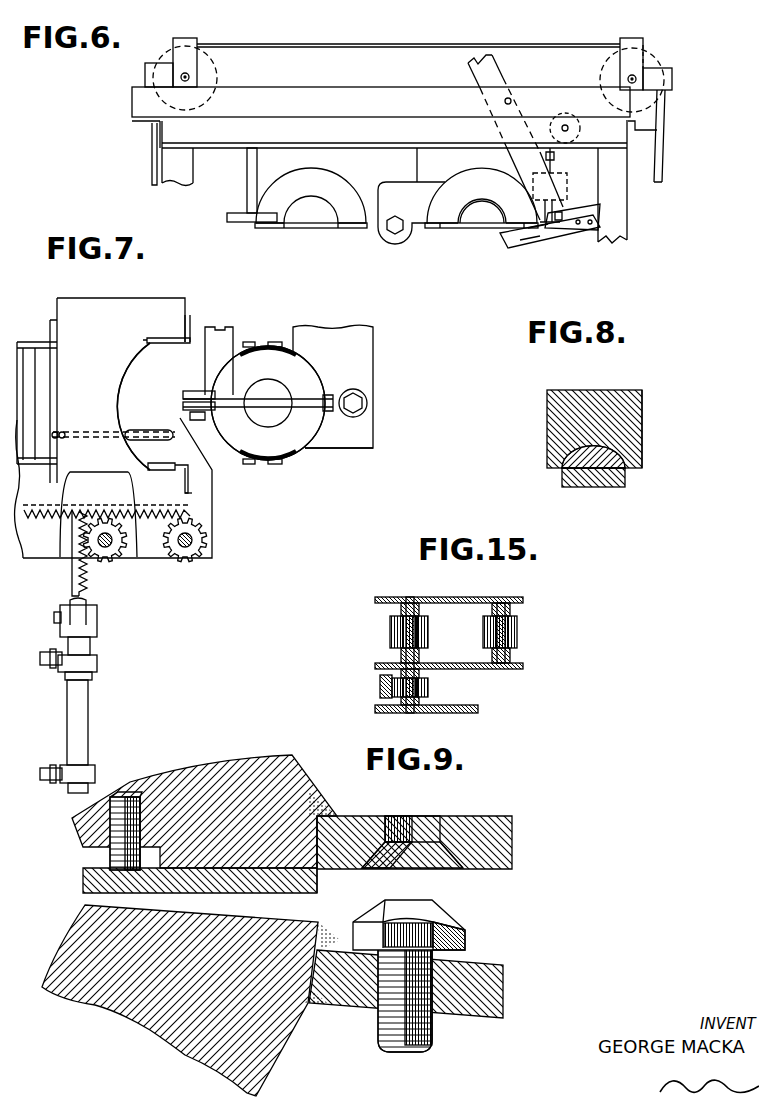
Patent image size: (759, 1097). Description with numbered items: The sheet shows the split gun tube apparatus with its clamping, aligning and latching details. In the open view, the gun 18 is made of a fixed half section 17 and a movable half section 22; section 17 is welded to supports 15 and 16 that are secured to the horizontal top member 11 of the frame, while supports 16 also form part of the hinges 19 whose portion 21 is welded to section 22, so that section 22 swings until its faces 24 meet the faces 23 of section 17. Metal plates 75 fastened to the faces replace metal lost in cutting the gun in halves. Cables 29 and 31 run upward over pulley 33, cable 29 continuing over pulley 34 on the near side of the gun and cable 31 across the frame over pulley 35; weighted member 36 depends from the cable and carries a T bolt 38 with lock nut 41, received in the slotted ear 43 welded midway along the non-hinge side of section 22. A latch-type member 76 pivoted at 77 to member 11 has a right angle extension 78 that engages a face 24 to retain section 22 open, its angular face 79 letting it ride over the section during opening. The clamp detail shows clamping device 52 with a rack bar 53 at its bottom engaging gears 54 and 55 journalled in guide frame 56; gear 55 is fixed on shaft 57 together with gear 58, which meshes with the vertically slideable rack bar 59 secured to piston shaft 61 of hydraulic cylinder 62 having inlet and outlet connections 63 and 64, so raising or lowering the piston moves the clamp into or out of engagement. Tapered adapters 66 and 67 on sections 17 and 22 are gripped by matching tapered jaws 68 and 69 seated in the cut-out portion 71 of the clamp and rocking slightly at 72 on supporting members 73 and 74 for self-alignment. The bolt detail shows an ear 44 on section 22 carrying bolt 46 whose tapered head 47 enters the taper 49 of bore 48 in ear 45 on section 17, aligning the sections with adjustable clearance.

In FIG. 6, the horizontal top member 11 is at (388, 117).
In FIG. 6, the support 15 is at (247, 178).
In FIG. 7, the support 15 is at (218, 328).
In FIG. 6, the support 16 is at (408, 163).
In FIG. 7, the support 16 is at (373, 343).
In FIG. 6, the half section 17 is at (320, 199).
In FIG. 7, the half section 17 is at (302, 379).
In FIG. 9, the half section 17 is at (290, 760).
In FIG. 6, the gun 18 is at (395, 176).
In FIG. 7, the gun 18 is at (301, 348).
In FIG. 6, the hinge 19 is at (395, 230).
In FIG. 7, the hinge 19 is at (362, 402).
In FIG. 6, the hinge portion 21 is at (415, 229).
In FIG. 7, the hinge portion 21 is at (350, 448).
In FIG. 6, the half section 22 is at (491, 197).
In FIG. 7, the half section 22 is at (300, 436).
In FIG. 9, the half section 22 is at (263, 1078).
In FIG. 6, the face 23 is at (338, 226).
In FIG. 6, the face 24 is at (447, 229).
In FIG. 6, the cable 29 is at (603, 76).
In FIG. 6, the cable 31 is at (152, 160).
In FIG. 6, the pulley 33 is at (610, 80).
In FIG. 6, the pulley 34 is at (578, 127).
In FIG. 6, the pulley 35 is at (150, 63).
In FIG. 6, the weighted member 36 is at (535, 178).
In FIG. 6, the T bolt 38 is at (560, 206).
In FIG. 6, the lock nut 41 is at (528, 236).
In FIG. 6, the slotted ear 43 is at (566, 219).
In FIG. 7, the ear 44 is at (183, 407).
In FIG. 9, the ear 44 is at (505, 986).
In FIG. 7, the ear 45 is at (185, 396).
In FIG. 9, the ear 45 is at (512, 840).
In FIG. 7, the bolt 46 is at (205, 419).
In FIG. 9, the bolt 46 is at (420, 1052).
In FIG. 9, the tapered head 47 is at (452, 919).
In FIG. 9, the bore 48 is at (407, 832).
In FIG. 9, the taper 49 is at (448, 856).
In FIG. 7, the clamping device 52 is at (58, 310).
In FIG. 8, the clamping device 52 is at (642, 393).
In FIG. 15, the clamping device 52 is at (388, 597).
In FIG. 7, the rack bar 53 is at (165, 510).
In FIG. 7, the gear 54 is at (206, 553).
In FIG. 15, the gear 54 is at (517, 635).
In FIG. 15, the gear 55 is at (398, 628).
In FIG. 7, the guide frame 56 is at (40, 419).
In FIG. 15, the shaft 57 is at (408, 660).
In FIG. 7, the gear 58 is at (115, 554).
In FIG. 15, the gear 58 is at (428, 688).
In FIG. 7, the rack bar 59 is at (70, 580).
In FIG. 15, the rack bar 59 is at (380, 688).
In FIG. 7, the piston shaft 61 is at (86, 645).
In FIG. 7, the hydraulic cylinder 62 is at (72, 698).
In FIG. 7, the inlet connection 63 is at (46, 652).
In FIG. 7, the outlet connection 64 is at (50, 770).
In FIG. 7, the tapered adapter 66 is at (263, 347).
In FIG. 7, the tapered adapter 67 is at (272, 463).
In FIG. 7, the tapered jaw 68 is at (155, 340).
In FIG. 8, the tapered jaw 68 is at (595, 488).
In FIG. 7, the tapered jaw 69 is at (180, 474).
In FIG. 7, the cut-out portion 71 is at (119, 392).
In FIG. 8, the rocking mount 72 is at (572, 452).
In FIG. 7, the supporting member 73 is at (186, 311).
In FIG. 8, the supporting member 73 is at (643, 419).
In FIG. 7, the supporting member 74 is at (190, 493).
In FIG. 6, the metal plate 75 is at (263, 229).
In FIG. 6, the latch-type member 76 is at (477, 70).
In FIG. 6, the pivot 77 is at (510, 98).
In FIG. 6, the right angle extension 78 is at (528, 241).
In FIG. 6, the angular face 79 is at (505, 241).